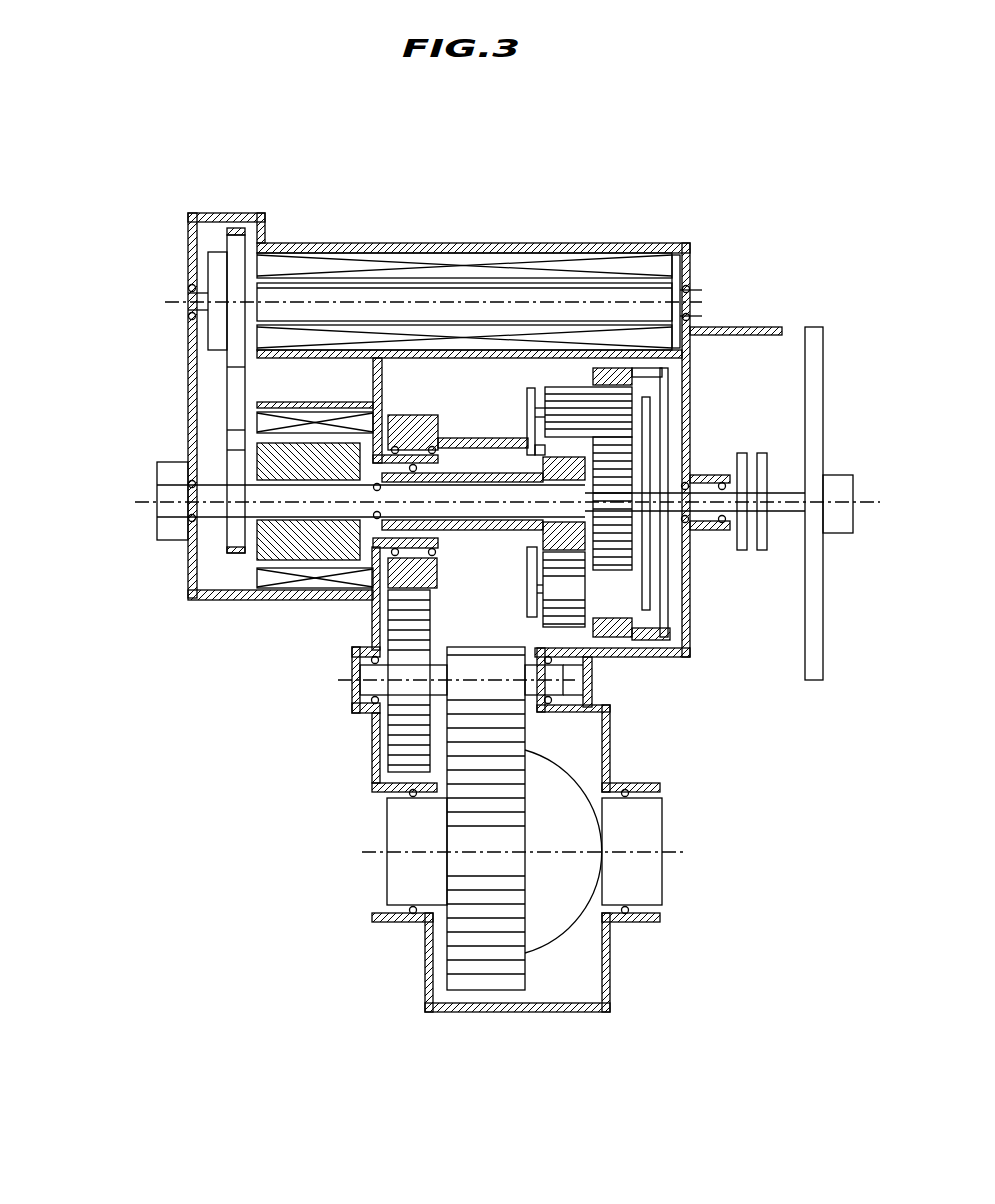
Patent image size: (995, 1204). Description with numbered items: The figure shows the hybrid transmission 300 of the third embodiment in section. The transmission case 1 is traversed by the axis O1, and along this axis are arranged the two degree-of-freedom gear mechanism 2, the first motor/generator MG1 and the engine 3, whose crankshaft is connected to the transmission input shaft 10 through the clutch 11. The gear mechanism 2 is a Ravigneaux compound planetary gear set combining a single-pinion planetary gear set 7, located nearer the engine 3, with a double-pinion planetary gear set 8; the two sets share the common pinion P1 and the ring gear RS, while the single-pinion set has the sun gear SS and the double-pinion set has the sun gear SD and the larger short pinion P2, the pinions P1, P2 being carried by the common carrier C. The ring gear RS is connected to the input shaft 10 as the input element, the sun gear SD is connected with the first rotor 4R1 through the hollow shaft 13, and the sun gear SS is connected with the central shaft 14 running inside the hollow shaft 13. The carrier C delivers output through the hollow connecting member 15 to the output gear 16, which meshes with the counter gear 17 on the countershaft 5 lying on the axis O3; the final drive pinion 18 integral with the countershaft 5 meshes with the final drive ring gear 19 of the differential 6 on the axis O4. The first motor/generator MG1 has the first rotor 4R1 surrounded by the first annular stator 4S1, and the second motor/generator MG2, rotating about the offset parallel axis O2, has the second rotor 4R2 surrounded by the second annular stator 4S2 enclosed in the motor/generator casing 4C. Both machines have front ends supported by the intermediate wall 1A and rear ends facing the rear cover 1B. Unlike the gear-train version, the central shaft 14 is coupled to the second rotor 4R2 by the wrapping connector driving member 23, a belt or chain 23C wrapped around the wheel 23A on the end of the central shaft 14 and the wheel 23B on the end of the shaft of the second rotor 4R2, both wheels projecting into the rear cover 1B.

The hybrid transmission 300 is at (538, 213).
The transmission case 1 is at (488, 345).
The intermediate wall 1A is at (373, 373).
The rear cover 1B is at (188, 362).
The two degree-of-freedom gear mechanism 2 is at (613, 406).
The single-pinion planetary gear set 7 is at (620, 350).
The double-pinion planetary gear set 8 is at (561, 380).
The engine 3 is at (837, 525).
The motor/generator casing 4C is at (387, 245).
The first annular stator 4S1 is at (257, 427).
The first rotor 4R1 is at (257, 466).
The second annular stator 4S2 is at (257, 265).
The second rotor 4R2 is at (257, 290).
The first motor/generator MG1 is at (205, 495).
The second motor/generator MG2 is at (359, 280).
The countershaft 5 is at (560, 672).
The differential 6 is at (504, 841).
The transmission input shaft 10 is at (703, 493).
The clutch 11 is at (753, 453).
The hollow shaft 13 is at (507, 467).
The central shaft 14 is at (460, 497).
The hollow connecting member 15 is at (452, 437).
The output gear 16 is at (413, 413).
The counter gear 17 is at (397, 613).
The final drive pinion 18 is at (513, 690).
The final drive ring gear 19 is at (512, 747).
The wrapping connector driving member 23 is at (218, 410).
The wheel 23A is at (222, 535).
The wheel 23B is at (229, 337).
The belt or chain 23C is at (237, 229).
The ring gear RS is at (630, 372).
The common pinion P1 is at (618, 402).
The short pinion P2 is at (543, 617).
The sun gear SS is at (620, 458).
The sun gear SD is at (527, 587).
The carrier C is at (652, 573).
The axis O1 is at (862, 500).
The axis O2 is at (698, 303).
The axis O3 is at (347, 680).
The axis O4 is at (370, 853).